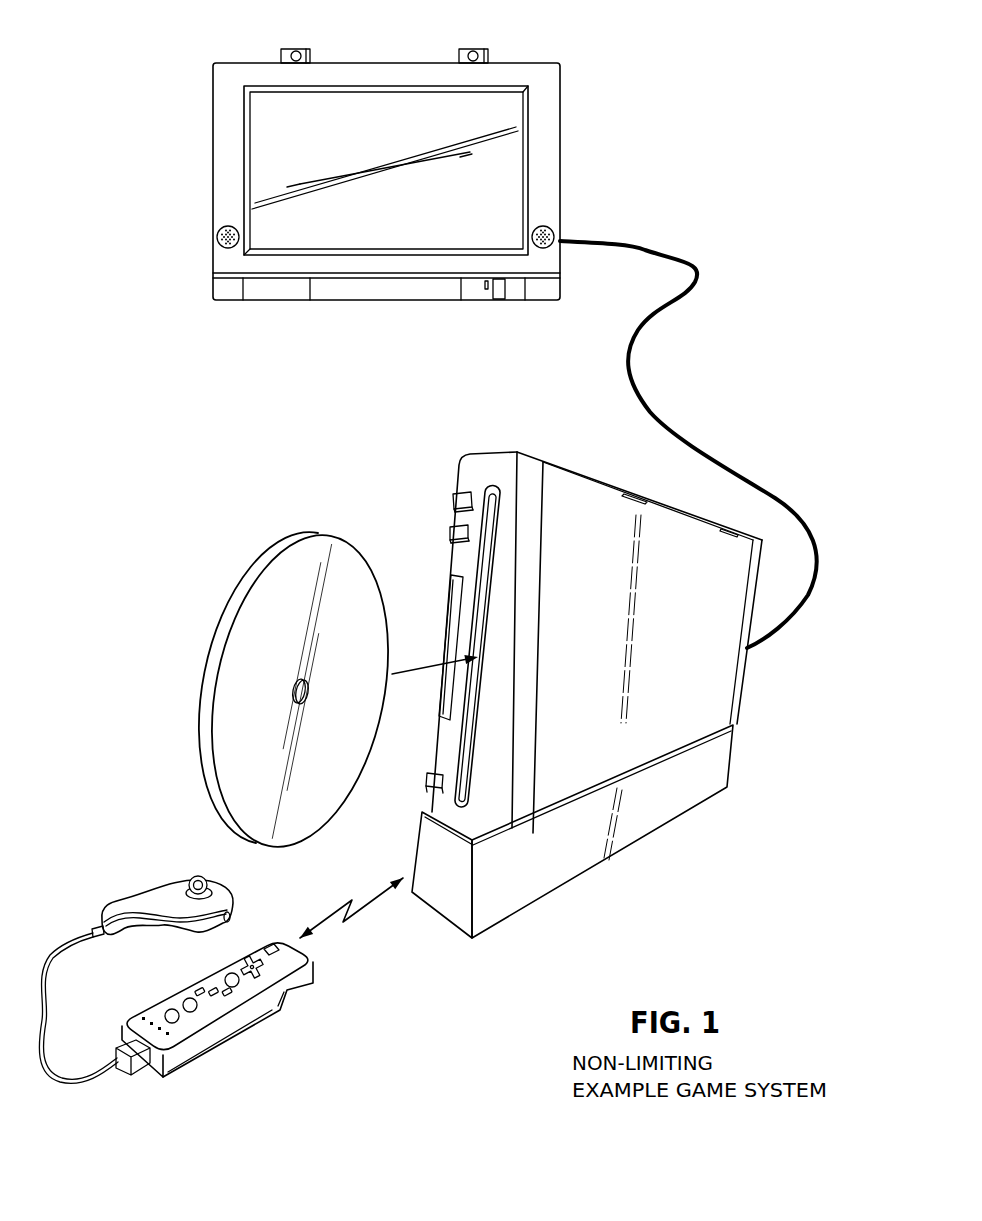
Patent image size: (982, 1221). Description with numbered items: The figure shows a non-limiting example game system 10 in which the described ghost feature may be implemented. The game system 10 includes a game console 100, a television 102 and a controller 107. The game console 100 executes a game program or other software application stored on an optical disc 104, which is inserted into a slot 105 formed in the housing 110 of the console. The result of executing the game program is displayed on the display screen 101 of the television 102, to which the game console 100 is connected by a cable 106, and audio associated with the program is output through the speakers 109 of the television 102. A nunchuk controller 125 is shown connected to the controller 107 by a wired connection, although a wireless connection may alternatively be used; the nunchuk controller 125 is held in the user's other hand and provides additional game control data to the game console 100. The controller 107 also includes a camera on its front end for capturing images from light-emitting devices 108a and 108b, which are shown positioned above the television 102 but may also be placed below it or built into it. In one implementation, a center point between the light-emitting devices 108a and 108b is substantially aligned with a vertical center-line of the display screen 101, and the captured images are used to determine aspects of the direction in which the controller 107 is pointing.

The game system 10 is at (266, 413).
The game console 100 is at (756, 686).
The display screen 101 is at (280, 134).
The television 102 is at (575, 146).
The optical disc 104 is at (207, 787).
The slot 105 is at (491, 498).
The cable 106 is at (673, 432).
The controller 107 is at (331, 964).
The light-emitting device 108a is at (311, 51).
The light-emitting device 108b is at (488, 51).
The speakers 109 is at (217, 247).
The housing 110 is at (601, 479).
The nunchuk controller 125 is at (143, 903).